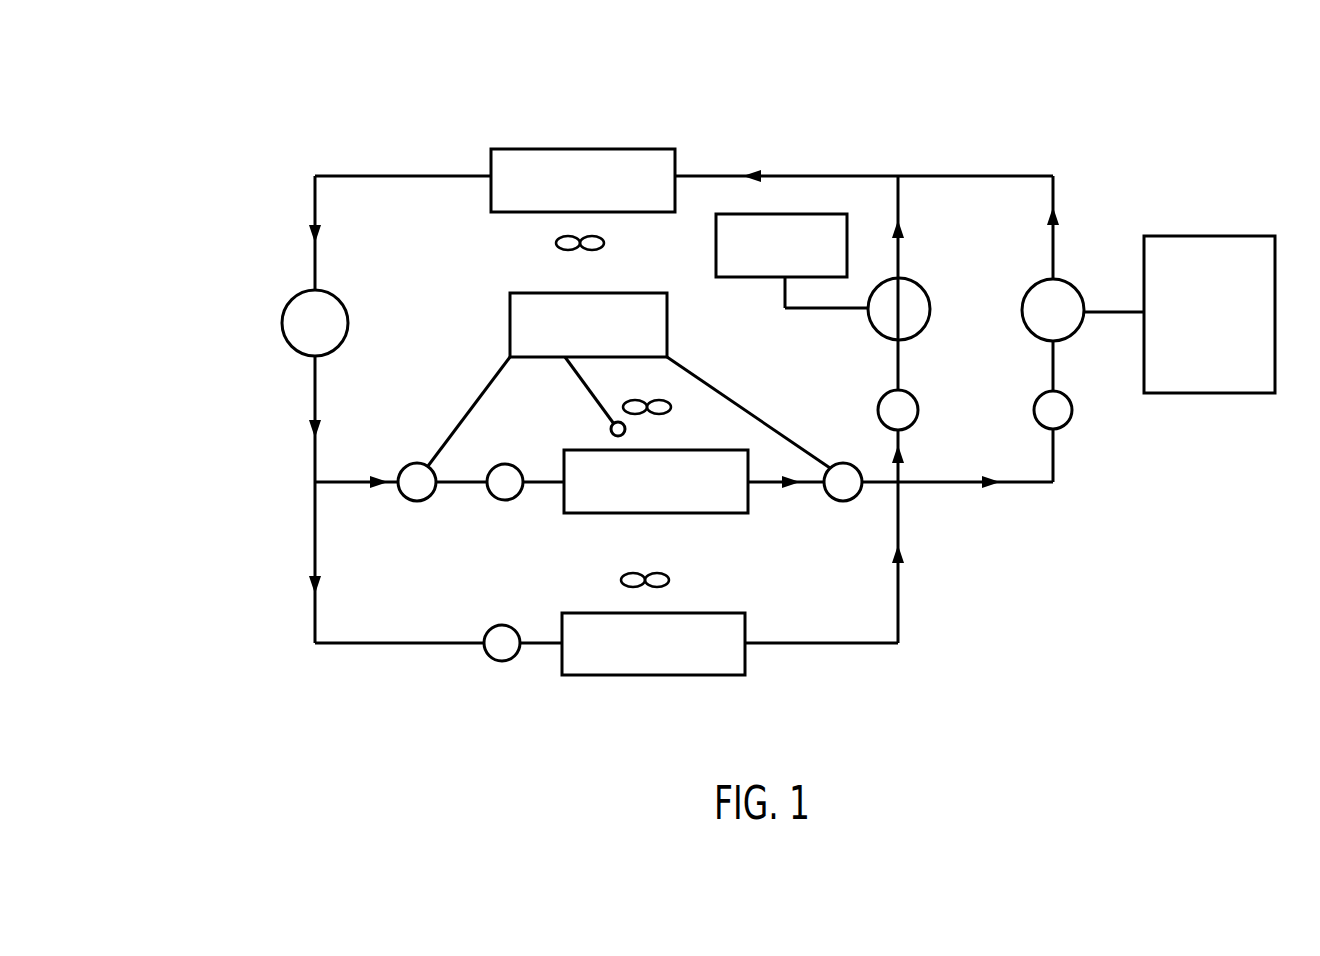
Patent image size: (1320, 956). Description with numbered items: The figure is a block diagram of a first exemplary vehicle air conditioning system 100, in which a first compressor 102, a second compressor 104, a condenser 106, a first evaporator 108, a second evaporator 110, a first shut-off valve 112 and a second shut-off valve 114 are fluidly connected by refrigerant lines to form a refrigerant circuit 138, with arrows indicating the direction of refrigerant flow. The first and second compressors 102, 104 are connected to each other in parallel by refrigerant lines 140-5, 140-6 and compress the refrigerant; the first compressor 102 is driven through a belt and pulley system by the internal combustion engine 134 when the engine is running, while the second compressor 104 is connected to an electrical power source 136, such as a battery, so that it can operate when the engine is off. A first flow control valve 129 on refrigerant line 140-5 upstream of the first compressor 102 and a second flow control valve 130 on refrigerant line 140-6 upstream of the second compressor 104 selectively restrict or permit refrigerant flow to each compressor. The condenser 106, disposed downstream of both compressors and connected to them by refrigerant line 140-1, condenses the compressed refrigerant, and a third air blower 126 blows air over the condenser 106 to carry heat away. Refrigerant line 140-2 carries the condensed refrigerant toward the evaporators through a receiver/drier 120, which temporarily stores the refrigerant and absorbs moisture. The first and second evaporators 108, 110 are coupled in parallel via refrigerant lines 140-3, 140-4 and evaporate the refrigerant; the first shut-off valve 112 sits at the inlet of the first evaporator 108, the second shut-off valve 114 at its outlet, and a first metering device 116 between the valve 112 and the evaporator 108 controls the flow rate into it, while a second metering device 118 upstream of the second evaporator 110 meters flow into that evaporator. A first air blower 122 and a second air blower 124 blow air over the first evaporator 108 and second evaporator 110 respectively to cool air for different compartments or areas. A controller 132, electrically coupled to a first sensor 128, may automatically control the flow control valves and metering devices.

The air conditioning system 100 is at (735, 393).
The first compressor 102 is at (920, 284).
The second compressor 104 is at (1072, 290).
The condenser 106 is at (605, 149).
The first evaporator 108 is at (625, 513).
The second evaporator 110 is at (672, 675).
The first shut-off valve 112 is at (414, 502).
The second shut-off valve 114 is at (838, 502).
The first metering device 116 is at (501, 501).
The second metering device 118 is at (495, 662).
The receiver/drier 120 is at (291, 303).
The first air blower 122 is at (672, 413).
The second air blower 124 is at (672, 586).
The third air blower 126 is at (553, 246).
The first sensor 128 is at (610, 431).
The first flow control valve 129 is at (914, 397).
The second flow control valve 130 is at (1070, 422).
The controller 132 is at (510, 322).
The internal combustion engine 134 is at (716, 246).
The electrical power source 136 is at (1205, 236).
The refrigerant circuit 138 is at (952, 566).
The refrigerant line 140-1 is at (810, 176).
The refrigerant line 140-2 is at (347, 174).
The refrigerant line 140-3 is at (347, 477).
The refrigerant line 140-4 is at (338, 647).
The refrigerant line 140-5 is at (899, 214).
The refrigerant line 140-6 is at (1012, 176).